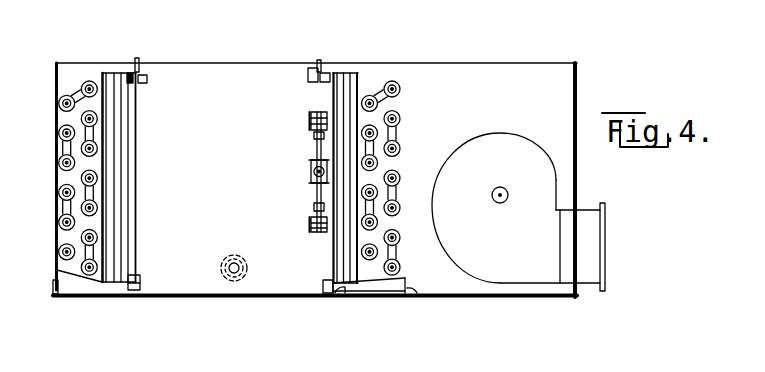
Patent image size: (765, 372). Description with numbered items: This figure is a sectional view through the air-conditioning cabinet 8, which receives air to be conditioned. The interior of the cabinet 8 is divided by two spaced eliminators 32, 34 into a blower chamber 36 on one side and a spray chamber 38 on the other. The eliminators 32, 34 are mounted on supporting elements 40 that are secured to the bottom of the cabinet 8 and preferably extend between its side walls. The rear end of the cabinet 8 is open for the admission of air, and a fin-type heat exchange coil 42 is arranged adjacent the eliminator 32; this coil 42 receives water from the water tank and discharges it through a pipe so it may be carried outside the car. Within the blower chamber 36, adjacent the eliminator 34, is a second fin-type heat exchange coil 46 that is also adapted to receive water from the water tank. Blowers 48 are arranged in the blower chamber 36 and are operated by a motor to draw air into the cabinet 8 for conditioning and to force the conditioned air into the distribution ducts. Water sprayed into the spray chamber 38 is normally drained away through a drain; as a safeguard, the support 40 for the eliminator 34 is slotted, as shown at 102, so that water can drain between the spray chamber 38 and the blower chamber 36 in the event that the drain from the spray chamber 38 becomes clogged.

The cabinet 8 is at (578, 80).
The eliminator 32 is at (110, 86).
The eliminator 34 is at (356, 70).
The blower chamber 36 is at (495, 180).
The spray chamber 38 is at (235, 178).
The supporting elements 40 is at (417, 293).
The heat exchange coil 42 is at (66, 97).
The heat exchange coil 46 is at (394, 84).
The blowers 48 is at (538, 184).
The slot 102 is at (342, 290).